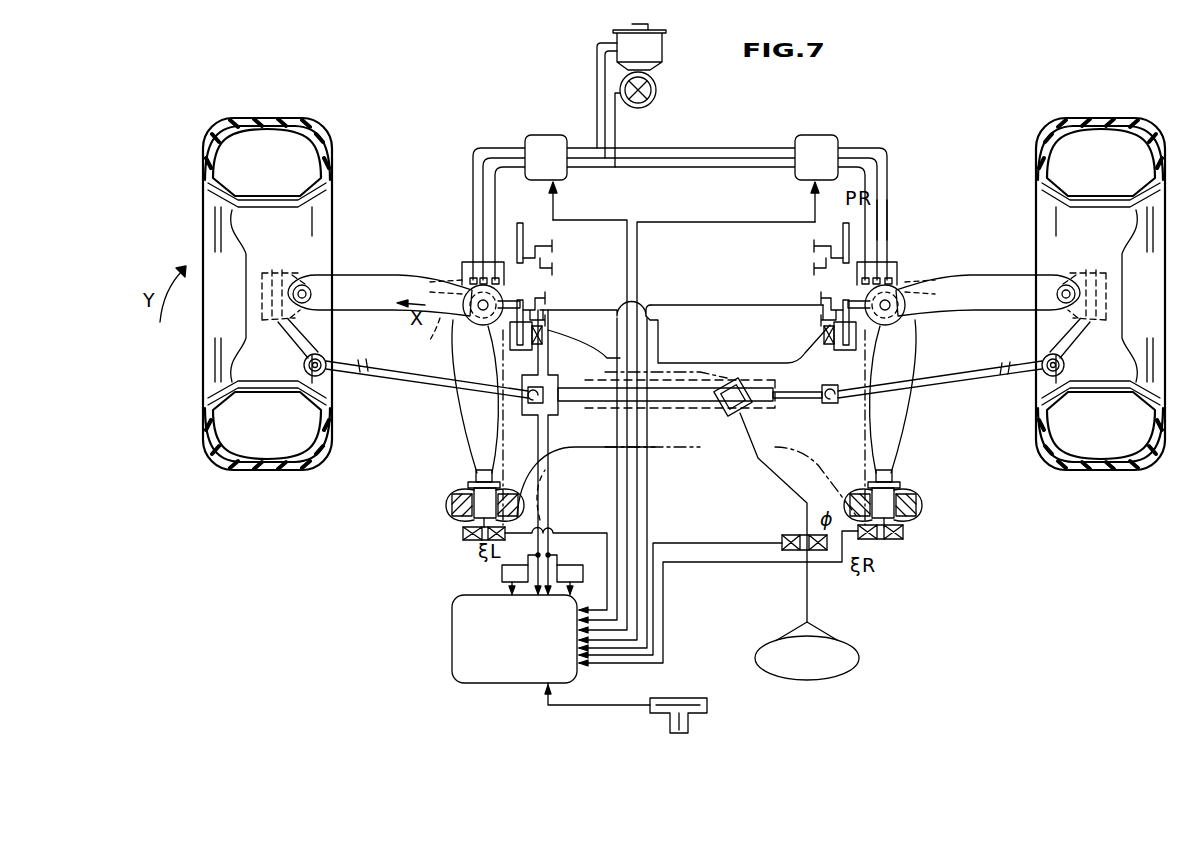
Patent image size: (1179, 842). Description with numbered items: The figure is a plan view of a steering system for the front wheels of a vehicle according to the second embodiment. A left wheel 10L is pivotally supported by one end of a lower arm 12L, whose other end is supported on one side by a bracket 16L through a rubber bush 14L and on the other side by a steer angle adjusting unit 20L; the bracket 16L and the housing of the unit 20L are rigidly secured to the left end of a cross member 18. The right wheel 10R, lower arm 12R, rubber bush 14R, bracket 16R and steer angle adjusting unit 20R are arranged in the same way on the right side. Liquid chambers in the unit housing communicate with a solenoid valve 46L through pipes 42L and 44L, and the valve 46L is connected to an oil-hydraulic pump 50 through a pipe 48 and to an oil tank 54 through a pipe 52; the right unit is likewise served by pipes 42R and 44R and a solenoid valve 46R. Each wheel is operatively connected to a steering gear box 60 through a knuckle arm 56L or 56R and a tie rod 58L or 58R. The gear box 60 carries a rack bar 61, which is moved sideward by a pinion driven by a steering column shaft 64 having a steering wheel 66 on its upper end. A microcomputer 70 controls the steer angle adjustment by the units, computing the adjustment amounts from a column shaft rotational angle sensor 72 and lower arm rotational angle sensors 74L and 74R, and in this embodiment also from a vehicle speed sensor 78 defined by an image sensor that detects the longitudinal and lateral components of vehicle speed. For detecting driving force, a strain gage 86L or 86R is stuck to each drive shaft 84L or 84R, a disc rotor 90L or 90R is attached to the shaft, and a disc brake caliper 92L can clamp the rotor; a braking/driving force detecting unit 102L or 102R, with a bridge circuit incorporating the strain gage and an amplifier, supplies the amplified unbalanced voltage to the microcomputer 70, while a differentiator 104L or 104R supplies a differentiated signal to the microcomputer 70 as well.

The left wheel 10L is at (330, 192).
The right wheel 10R is at (1042, 195).
The lower arm 12L is at (380, 278).
The lower arm 12R is at (990, 280).
The rubber bush 14L is at (476, 476).
The rubber bush 14R is at (898, 478).
The bracket 16L is at (456, 504).
The bracket 16R is at (915, 500).
The cross member 18 is at (604, 455).
The steer angle adjusting unit 20L is at (466, 330).
The steer angle adjusting unit 20R is at (906, 320).
The pipe 42L is at (473, 162).
The pipe 42R is at (890, 192).
The pipe 44L is at (483, 150).
The pipe 44R is at (878, 226).
The solenoid valve 46L is at (545, 133).
The solenoid valve 46R is at (818, 133).
The pipe 48 is at (618, 128).
The oil-hydraulic pump 50 is at (656, 92).
The pipe 52 is at (597, 66).
The oil tank 54 is at (662, 50).
The knuckle arm 56L is at (304, 370).
The knuckle arm 56R is at (1064, 364).
The tie rod 58L is at (400, 390).
The tie rod 58R is at (958, 384).
The steering gear box 60 is at (708, 415).
The rack bar 61 is at (576, 408).
The steering column shaft 64 is at (790, 535).
The steering wheel 66 is at (850, 648).
The microcomputer 70 is at (506, 683).
The column shaft rotational angle sensor 72 is at (816, 555).
The lower arm rotational angle sensor 74L is at (462, 538).
The lower arm rotational angle sensor 74R is at (898, 540).
The vehicle speed sensor 78 is at (696, 728).
The drive shaft 84L is at (440, 278).
The drive shaft 84R is at (948, 278).
The strain gage 86L is at (450, 268).
The strain gage 86R is at (914, 290).
The disc rotor 90L is at (548, 244).
The disc rotor 90R is at (818, 243).
The disc brake caliper 92L is at (428, 366).
The braking/driving force detecting unit 102L is at (543, 336).
The braking/driving force detecting unit 102R is at (838, 368).
The differentiator 104L is at (502, 574).
The differentiator 104R is at (596, 556).